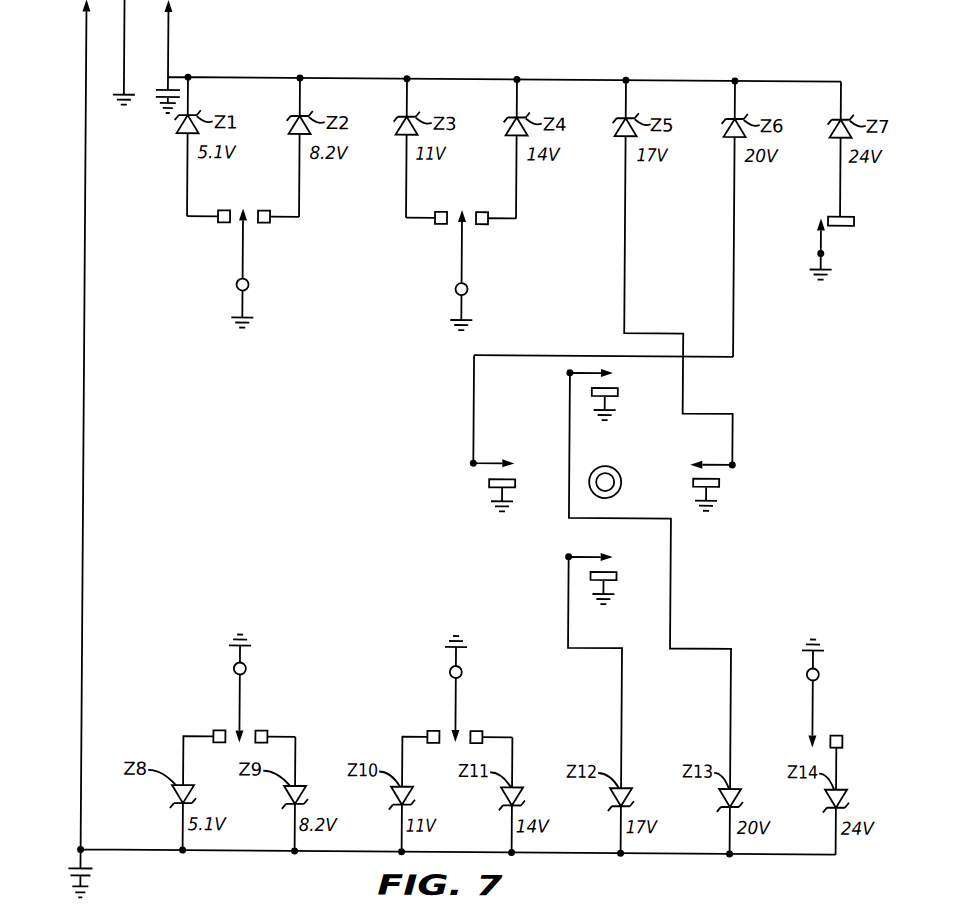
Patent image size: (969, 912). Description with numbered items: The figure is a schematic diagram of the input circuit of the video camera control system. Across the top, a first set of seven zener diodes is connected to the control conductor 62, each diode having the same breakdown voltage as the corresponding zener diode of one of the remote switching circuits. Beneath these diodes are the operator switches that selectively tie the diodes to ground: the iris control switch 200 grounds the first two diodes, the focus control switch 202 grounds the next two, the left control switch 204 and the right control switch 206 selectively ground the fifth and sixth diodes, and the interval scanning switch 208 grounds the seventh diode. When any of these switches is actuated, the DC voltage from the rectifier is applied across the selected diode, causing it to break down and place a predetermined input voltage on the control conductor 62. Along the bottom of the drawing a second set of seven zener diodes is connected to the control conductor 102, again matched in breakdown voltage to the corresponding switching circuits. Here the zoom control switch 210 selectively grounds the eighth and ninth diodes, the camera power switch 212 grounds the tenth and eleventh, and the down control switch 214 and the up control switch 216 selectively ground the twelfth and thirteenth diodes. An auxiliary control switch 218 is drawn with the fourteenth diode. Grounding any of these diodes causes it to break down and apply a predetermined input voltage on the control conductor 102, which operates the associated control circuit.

The control conductor 62 is at (168, 39).
The control conductor 102 is at (86, 219).
The iris control switch 200 is at (244, 259).
The focus control switch 202 is at (463, 259).
The left control switch 204 is at (720, 461).
The right control switch 206 is at (494, 461).
The interval scanning switch 208 is at (818, 257).
The zoom control switch 210 is at (244, 699).
The camera power switch 212 is at (460, 700).
The down control switch 214 is at (595, 554).
The up control switch 216 is at (572, 370).
The auxiliary control switch 218 is at (817, 704).